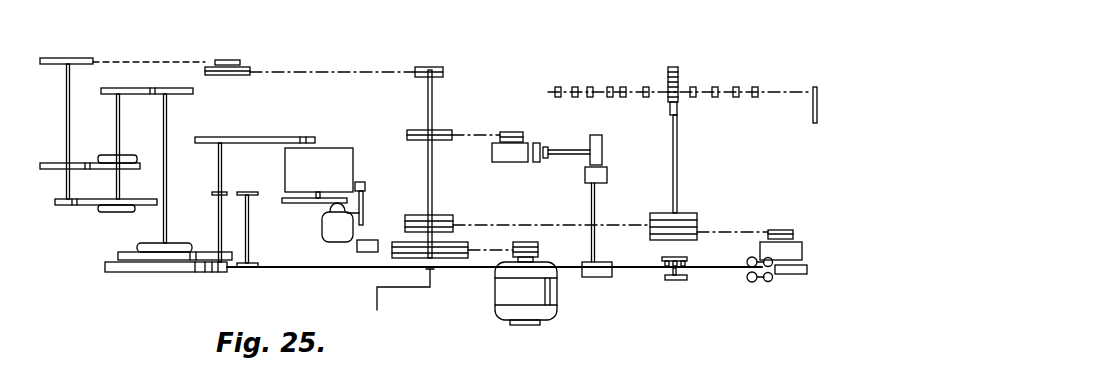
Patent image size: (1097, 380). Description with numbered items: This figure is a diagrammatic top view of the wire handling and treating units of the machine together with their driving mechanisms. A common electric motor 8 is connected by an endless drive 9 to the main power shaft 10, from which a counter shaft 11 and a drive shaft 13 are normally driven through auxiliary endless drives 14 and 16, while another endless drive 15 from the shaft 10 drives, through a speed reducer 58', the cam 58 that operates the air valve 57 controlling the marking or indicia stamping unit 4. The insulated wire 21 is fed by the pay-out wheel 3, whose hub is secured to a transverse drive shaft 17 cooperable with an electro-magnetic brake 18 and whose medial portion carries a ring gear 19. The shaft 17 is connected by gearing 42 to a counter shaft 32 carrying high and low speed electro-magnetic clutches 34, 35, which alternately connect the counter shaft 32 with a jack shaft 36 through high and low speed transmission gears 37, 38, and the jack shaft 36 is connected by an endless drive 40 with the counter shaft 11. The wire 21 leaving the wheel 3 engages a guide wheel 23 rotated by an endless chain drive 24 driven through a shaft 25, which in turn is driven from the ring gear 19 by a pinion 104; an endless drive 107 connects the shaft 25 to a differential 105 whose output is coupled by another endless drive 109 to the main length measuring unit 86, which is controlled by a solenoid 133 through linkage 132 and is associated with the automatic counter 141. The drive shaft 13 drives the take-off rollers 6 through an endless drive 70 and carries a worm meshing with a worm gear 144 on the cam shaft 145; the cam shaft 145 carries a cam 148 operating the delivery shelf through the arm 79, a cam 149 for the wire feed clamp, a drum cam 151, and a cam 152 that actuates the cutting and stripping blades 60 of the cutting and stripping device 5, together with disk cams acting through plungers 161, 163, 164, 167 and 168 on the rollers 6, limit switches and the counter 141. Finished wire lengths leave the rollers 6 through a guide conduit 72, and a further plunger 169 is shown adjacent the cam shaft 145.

The pay-out wheel 3 is at (146, 272).
The marking or indicia stamping unit 4 is at (586, 278).
The cutting and stripping device 5 is at (663, 270).
The take-off rollers 6 is at (752, 282).
The electric motor 8 is at (512, 308).
The endless drive 9 is at (461, 259).
The main power shaft 10 is at (433, 184).
The counter shaft 11 is at (240, 58).
The drive shaft 13 is at (678, 163).
The endless drive 14 is at (338, 65).
The endless drive 15 is at (471, 135).
The endless drive 16 is at (572, 225).
The transverse drive shaft 17 is at (167, 187).
The electro-magnetic brake 18 is at (172, 246).
The ring gear 19 is at (118, 256).
The insulated wire 21 is at (309, 268).
The guide wheel 23 is at (248, 268).
The endless chain drive 24 is at (229, 197).
The shaft 25 is at (223, 175).
The counter shaft 32 is at (116, 119).
The high speed electro-magnetic driving clutch 34 is at (124, 159).
The low speed electro-magnetic driving clutch 35 is at (128, 212).
The jack shaft 36 is at (70, 80).
The high speed transmission gear 37 is at (83, 163).
The low speed transmission gear 38 is at (84, 206).
The endless drive 40 is at (119, 61).
The gearing 42 is at (149, 88).
The air valve 57 is at (607, 177).
The cam 58 is at (613, 150).
The speed reducer 58' is at (539, 159).
The cutting and stripping blades 60 is at (688, 270).
The endless drive 70 is at (741, 226).
The guide conduit 72 is at (788, 274).
The arm 79 is at (813, 107).
The main length measuring unit 86 is at (323, 234).
The pinion 104 is at (226, 272).
The differential 105 is at (319, 170).
The endless drive 107 is at (261, 130).
The endless drive 109 is at (308, 204).
The linkage 132 is at (363, 208).
The solenoid 133 is at (365, 185).
The automatic counter 141 is at (363, 257).
The worm gear 144 is at (678, 72).
The cam shaft 145 is at (548, 92).
The cam 148 is at (755, 87).
The cam 149 is at (736, 87).
The drum cam 151 is at (715, 97).
The cam 152 is at (692, 97).
The plunger 161 is at (646, 87).
The plunger 163 is at (623, 87).
The plunger 164 is at (610, 97).
The plunger 167 is at (590, 87).
The plunger 168 is at (575, 97).
The collar 169 is at (558, 87).